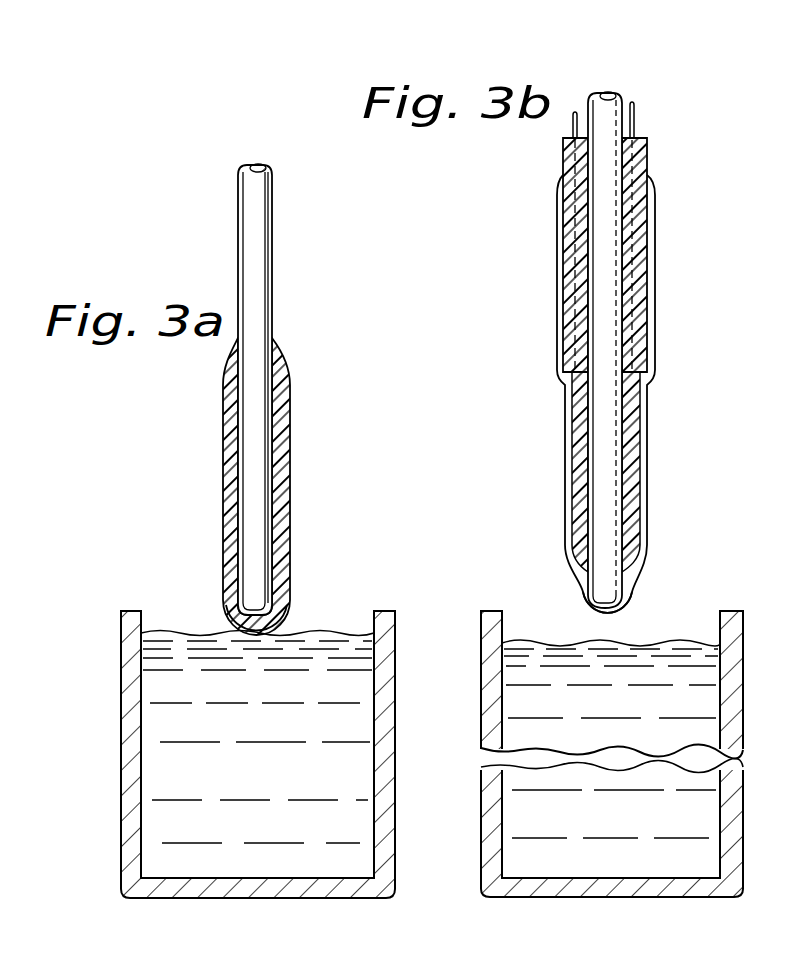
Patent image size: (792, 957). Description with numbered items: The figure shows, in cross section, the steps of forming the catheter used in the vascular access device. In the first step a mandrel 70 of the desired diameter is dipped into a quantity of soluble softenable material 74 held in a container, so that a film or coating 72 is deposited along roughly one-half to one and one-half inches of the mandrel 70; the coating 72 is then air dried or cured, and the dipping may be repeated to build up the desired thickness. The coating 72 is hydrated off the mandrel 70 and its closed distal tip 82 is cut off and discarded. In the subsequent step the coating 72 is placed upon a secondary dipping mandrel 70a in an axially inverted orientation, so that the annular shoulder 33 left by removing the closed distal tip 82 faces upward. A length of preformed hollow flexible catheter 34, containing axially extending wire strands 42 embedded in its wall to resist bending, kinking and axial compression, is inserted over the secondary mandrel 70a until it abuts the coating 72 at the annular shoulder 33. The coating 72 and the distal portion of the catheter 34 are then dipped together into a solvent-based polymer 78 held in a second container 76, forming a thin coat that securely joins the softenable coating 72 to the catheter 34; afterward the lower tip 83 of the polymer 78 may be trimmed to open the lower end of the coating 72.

In FIG. 3A, the mandrel 70 is at (258, 213).
In FIG. 3A, the coating of softenable material 72 is at (284, 456).
In FIG. 3B, the coating of softenable material 72 is at (578, 462).
In FIG. 3A, the soluble softenable material 74 is at (185, 655).
In FIG. 3A, the closed distal tip 82 is at (284, 623).
In FIG. 3B, the secondary dipping mandrel 70a is at (612, 418).
In FIG. 3B, the wire strands 42 is at (636, 122).
In FIG. 3B, the catheter 34 is at (648, 175).
In FIG. 3B, the annular shoulder 33 is at (572, 362).
In FIG. 3B, the polymer coat 78 is at (648, 482).
In FIG. 3B, the lower tip of polymer 83 is at (594, 608).
In FIG. 3B, the container of liquid 76 is at (672, 655).